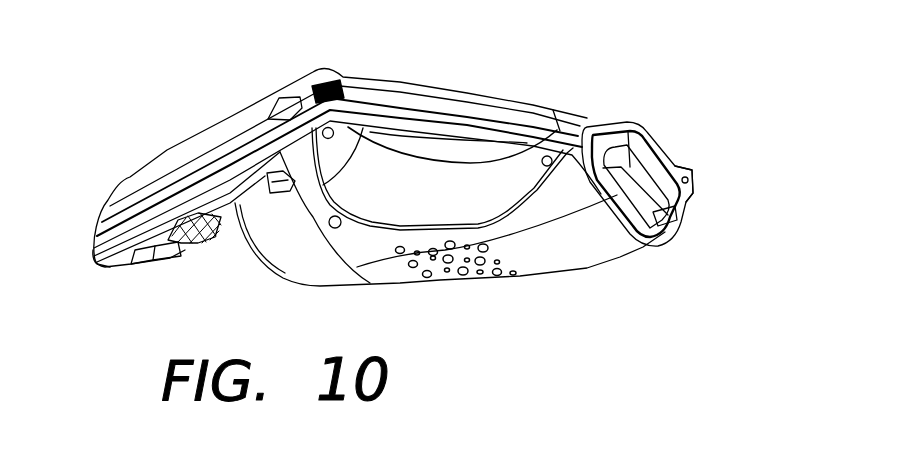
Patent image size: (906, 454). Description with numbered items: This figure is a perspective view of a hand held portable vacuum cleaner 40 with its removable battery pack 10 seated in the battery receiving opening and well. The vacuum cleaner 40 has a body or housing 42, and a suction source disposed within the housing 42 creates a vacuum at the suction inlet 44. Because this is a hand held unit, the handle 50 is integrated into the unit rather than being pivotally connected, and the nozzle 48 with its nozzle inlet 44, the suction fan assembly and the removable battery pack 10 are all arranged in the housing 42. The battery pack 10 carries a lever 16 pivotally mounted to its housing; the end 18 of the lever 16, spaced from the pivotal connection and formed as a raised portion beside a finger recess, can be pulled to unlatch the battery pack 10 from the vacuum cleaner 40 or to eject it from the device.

The removable battery pack 10 is at (620, 122).
The lever 16 is at (660, 146).
The end of the lever 18 is at (692, 187).
The vacuum cleaner 40 is at (596, 277).
The vacuum cleaner housing 42 is at (396, 268).
The suction inlet 44 is at (94, 263).
The nozzle portion 48 is at (117, 195).
The handle portion 50 is at (440, 107).